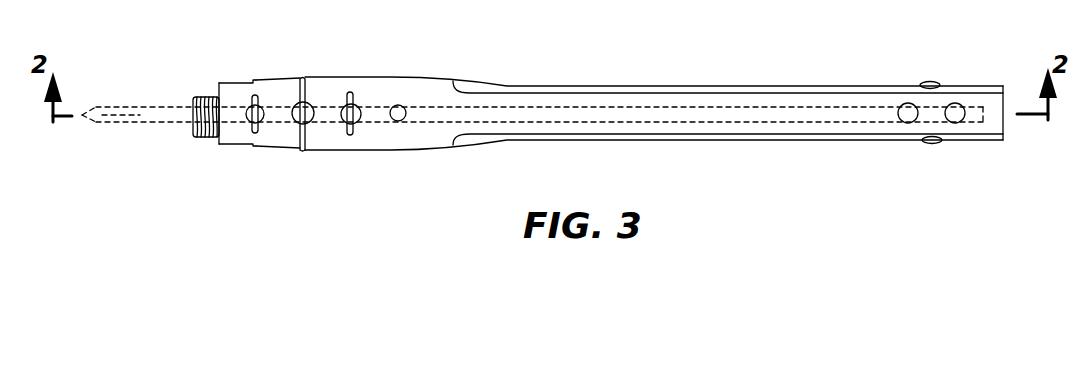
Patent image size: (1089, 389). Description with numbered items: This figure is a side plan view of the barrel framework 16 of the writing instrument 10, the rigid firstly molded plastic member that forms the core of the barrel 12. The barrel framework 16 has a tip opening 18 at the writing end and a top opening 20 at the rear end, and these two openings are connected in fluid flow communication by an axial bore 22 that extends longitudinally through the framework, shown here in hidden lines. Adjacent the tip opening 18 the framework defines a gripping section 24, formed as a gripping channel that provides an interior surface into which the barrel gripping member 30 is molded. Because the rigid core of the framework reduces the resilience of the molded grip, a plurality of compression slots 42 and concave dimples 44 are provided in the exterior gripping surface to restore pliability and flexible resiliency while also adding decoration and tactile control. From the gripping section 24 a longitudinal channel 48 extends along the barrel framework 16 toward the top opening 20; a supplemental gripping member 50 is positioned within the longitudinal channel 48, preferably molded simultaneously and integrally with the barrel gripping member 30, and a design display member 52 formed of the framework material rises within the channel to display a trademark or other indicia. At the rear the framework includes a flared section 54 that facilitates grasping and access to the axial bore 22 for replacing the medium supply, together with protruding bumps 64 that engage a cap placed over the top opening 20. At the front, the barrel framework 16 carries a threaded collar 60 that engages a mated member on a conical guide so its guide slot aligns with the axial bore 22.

The writing instrument 10 is at (447, 79).
The barrel 12 is at (331, 77).
The barrel framework 16 is at (480, 88).
The tip opening 18 is at (227, 83).
The top opening 20 is at (1005, 108).
The axial bore 22 is at (427, 100).
The gripping section 24 is at (385, 141).
The barrel gripping member 30 is at (388, 102).
The compression slots 42 is at (348, 92).
The concave dimples 44 is at (392, 119).
The longitudinal channel 48 is at (620, 100).
The supplemental gripping member 50 is at (838, 105).
The design display member 52 is at (757, 123).
The flared section 54 is at (987, 86).
The threaded collar 60 is at (203, 95).
The protruding bumps 64 is at (908, 103).